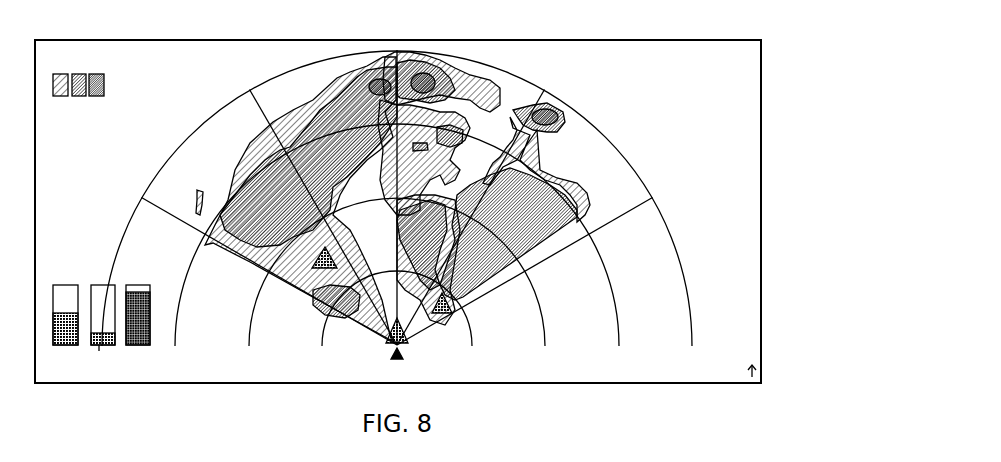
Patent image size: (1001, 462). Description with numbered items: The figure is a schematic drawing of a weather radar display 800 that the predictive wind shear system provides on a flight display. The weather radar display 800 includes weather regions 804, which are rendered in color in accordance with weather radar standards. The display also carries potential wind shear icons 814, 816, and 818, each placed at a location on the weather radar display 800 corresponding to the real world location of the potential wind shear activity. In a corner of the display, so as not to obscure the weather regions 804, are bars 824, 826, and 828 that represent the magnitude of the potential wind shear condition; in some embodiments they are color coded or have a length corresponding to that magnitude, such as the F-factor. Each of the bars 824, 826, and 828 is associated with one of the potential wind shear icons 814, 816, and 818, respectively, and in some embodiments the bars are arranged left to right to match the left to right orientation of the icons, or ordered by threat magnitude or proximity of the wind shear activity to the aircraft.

The weather radar display 800 is at (640, 18).
The weather regions 804 is at (407, 66).
The potential wind shear icon 814 is at (312, 256).
The potential wind shear icon 816 is at (410, 350).
The potential wind shear icon 818 is at (455, 304).
The bar 824 is at (62, 284).
The bar 826 is at (100, 284).
The bar 828 is at (138, 284).